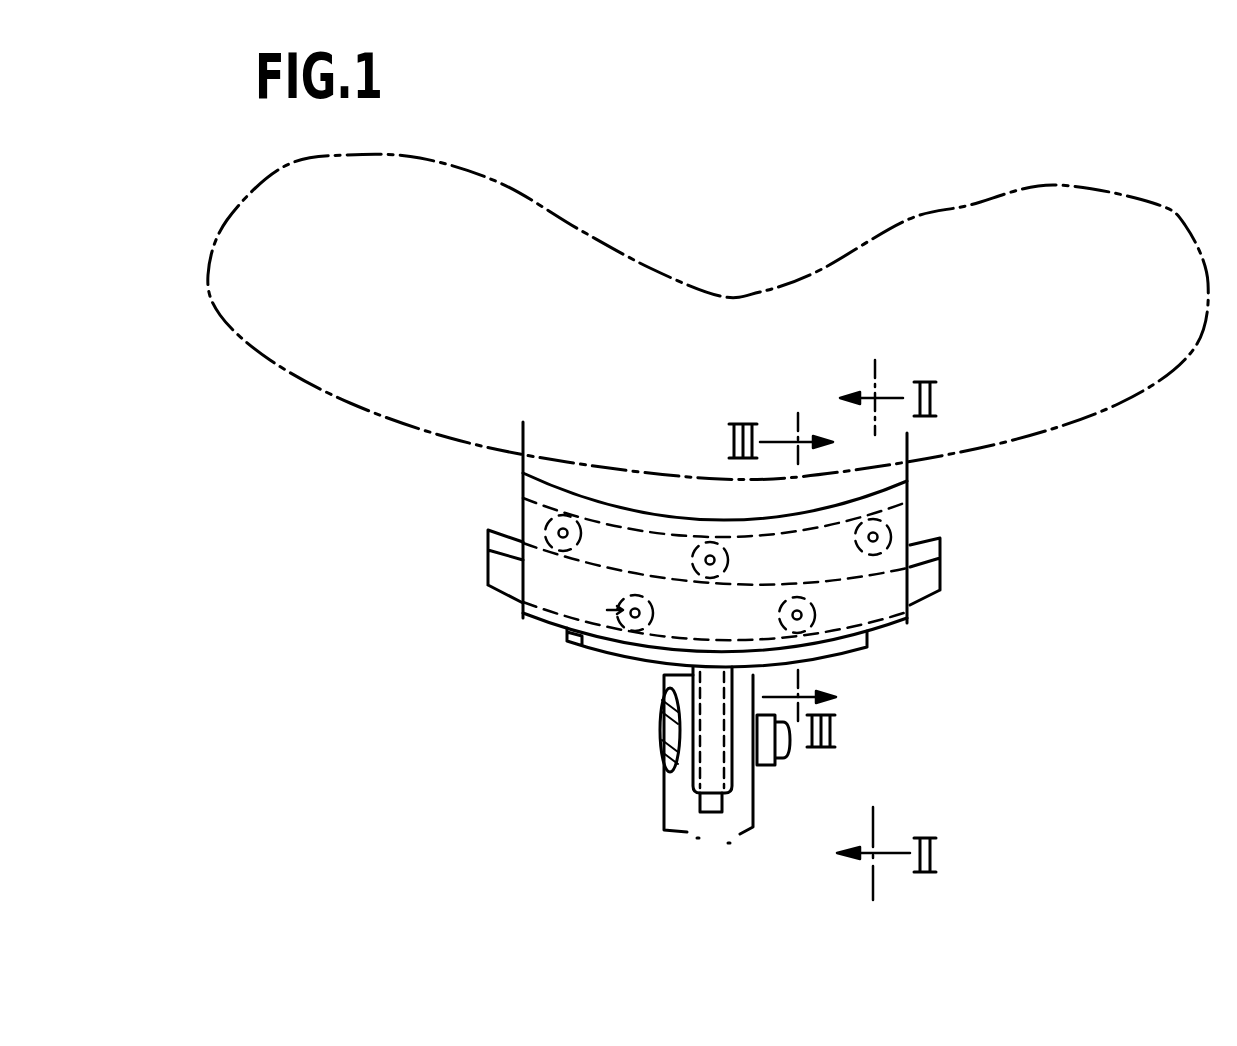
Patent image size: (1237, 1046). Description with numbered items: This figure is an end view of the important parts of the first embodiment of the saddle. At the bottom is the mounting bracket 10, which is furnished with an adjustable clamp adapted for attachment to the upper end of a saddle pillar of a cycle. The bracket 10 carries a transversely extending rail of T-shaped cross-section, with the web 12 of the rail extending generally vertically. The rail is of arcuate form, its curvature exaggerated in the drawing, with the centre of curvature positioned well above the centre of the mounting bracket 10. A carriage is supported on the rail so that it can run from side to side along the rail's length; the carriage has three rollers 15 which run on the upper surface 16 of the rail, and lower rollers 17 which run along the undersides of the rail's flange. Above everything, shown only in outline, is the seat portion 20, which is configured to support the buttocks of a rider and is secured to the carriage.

The seat portion 20 is at (853, 285).
The rollers 15 is at (547, 530).
The web 12 is at (500, 572).
The upper surface 16 is at (931, 542).
The lower rollers 17 is at (579, 650).
The mounting bracket 10 is at (620, 655).